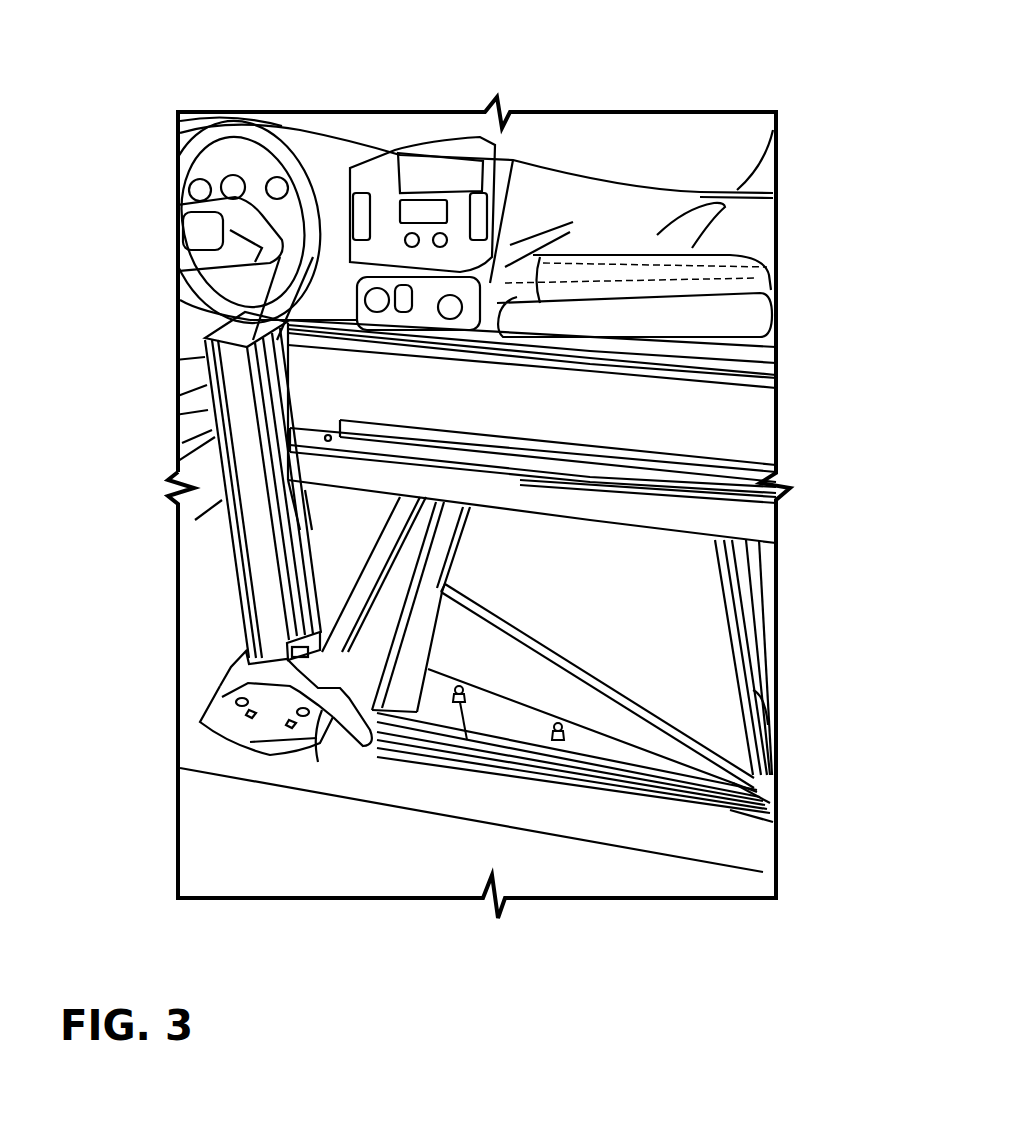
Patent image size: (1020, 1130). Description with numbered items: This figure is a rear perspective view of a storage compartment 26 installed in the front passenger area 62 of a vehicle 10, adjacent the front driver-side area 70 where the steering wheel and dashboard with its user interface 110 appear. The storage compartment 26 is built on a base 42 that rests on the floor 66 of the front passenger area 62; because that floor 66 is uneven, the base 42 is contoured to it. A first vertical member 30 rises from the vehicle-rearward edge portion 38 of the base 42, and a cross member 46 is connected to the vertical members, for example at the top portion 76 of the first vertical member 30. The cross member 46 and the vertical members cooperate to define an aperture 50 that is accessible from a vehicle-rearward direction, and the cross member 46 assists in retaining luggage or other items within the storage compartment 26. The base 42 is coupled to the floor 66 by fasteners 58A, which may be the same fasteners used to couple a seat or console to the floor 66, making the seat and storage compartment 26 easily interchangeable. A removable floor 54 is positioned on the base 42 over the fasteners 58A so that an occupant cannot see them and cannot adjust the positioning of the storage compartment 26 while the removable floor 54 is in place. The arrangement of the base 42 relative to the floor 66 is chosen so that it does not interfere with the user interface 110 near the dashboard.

The vehicle 10 is at (257, 95).
The user interface 110 is at (432, 158).
The front passenger area 62 is at (623, 182).
The storage compartment 26 is at (722, 312).
The cross member 46 is at (700, 423).
The front driver-side area 70 is at (185, 344).
The top portion 76 is at (247, 405).
The first vertical member 30 is at (403, 687).
The base 42 is at (275, 727).
The vehicle-rearward edge portion 38 is at (380, 690).
The aperture 50 is at (668, 683).
The removable floor 54 is at (673, 617).
The floor 66 is at (597, 712).
The fasteners 58A is at (563, 727).